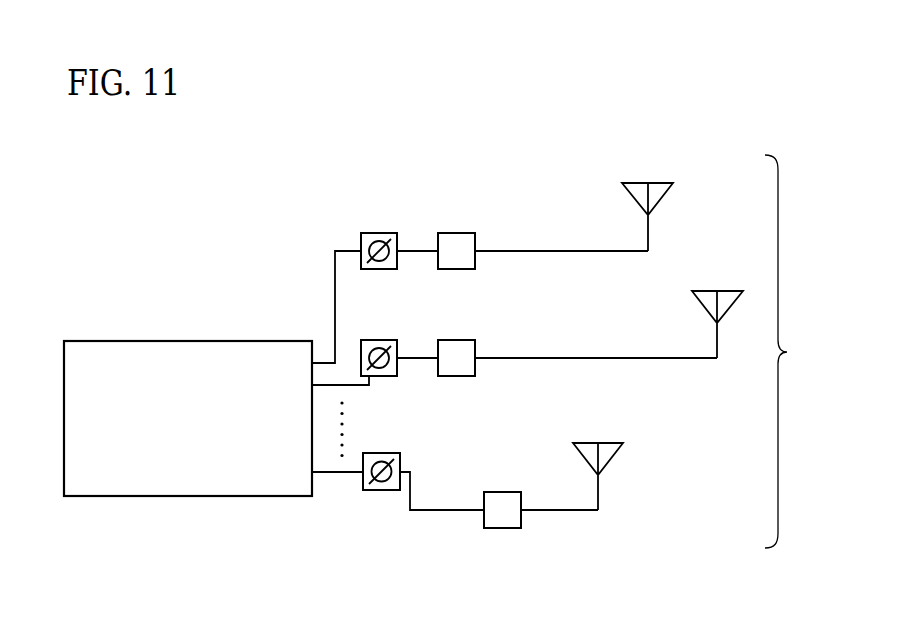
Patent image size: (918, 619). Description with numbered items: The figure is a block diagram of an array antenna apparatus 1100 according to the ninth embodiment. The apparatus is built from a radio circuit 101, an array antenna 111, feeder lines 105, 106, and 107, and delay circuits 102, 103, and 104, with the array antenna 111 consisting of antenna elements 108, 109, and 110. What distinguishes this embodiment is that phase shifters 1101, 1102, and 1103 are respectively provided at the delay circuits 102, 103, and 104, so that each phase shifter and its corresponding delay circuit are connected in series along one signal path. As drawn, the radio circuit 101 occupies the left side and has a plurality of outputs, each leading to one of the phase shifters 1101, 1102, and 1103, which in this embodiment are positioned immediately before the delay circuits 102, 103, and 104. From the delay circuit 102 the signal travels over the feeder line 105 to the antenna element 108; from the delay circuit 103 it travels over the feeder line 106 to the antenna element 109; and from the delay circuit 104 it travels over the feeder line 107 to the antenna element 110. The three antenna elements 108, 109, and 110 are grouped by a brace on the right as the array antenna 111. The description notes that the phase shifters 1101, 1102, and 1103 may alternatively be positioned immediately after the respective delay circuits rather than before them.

The radio circuit 101 is at (220, 340).
The phase shifter 1101 is at (380, 232).
The phase shifter 1102 is at (380, 339).
The phase shifter 1103 is at (383, 452).
The delay circuit 102 is at (456, 232).
The delay circuit 103 is at (457, 339).
The delay circuit 104 is at (503, 491).
The feeder line 105 is at (549, 253).
The feeder line 106 is at (549, 360).
The feeder line 107 is at (550, 512).
The antenna element 108 is at (657, 182).
The antenna element 109 is at (727, 290).
The antenna element 110 is at (608, 442).
The array antenna 111 is at (798, 351).
The array antenna apparatus 1100 is at (462, 597).